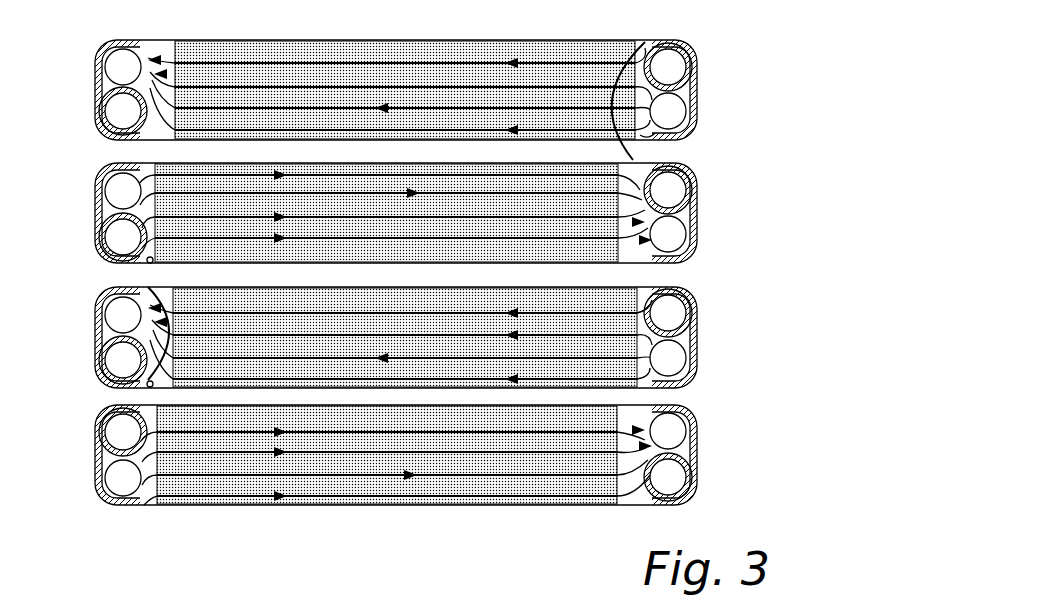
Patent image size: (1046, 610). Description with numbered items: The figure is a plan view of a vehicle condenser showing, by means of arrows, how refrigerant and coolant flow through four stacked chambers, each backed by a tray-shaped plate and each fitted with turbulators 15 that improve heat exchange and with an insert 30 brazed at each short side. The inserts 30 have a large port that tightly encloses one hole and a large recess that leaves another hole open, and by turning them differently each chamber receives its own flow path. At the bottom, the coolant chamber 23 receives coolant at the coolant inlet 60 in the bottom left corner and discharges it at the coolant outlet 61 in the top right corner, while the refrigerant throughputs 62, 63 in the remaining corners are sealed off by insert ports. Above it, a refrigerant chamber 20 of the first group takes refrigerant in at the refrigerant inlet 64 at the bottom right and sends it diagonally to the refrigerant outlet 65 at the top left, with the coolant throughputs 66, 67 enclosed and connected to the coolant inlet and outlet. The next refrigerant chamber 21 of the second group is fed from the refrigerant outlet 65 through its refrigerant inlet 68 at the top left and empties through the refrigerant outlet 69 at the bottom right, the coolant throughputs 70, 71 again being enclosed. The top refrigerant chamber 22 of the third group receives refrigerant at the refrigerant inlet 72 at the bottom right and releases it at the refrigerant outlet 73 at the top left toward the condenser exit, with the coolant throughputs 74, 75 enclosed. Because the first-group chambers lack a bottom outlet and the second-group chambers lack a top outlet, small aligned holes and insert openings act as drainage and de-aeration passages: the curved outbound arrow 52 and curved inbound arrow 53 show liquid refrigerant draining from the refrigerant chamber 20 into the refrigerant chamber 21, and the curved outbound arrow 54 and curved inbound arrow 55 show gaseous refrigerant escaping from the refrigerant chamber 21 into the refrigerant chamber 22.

The turbulators 15 is at (478, 492).
The refrigerant chamber of the first group 20 is at (113, 352).
The refrigerant chamber of the second group 21 is at (118, 238).
The refrigerant chamber of the third group 22 is at (98, 103).
The coolant chamber 23 is at (105, 470).
The insert 30 is at (97, 85).
The curved outbound arrow 52 is at (148, 380).
The curved inbound arrow 53 is at (148, 260).
The curved outbound arrow 54 is at (648, 138).
The curved inbound arrow 55 is at (645, 42).
The coolant inlet 60 is at (112, 484).
The coolant outlet 61 is at (692, 428).
The refrigerant throughput 62 is at (122, 432).
The refrigerant throughput 63 is at (685, 485).
The refrigerant inlet 64 is at (680, 365).
The refrigerant outlet 65 is at (110, 318).
The coolant throughput 66 is at (112, 374).
The coolant throughput 67 is at (692, 312).
The refrigerant inlet 68 is at (122, 196).
The refrigerant outlet 69 is at (680, 240).
The coolant throughput 70 is at (108, 258).
The coolant throughput 71 is at (692, 183).
The refrigerant inlet 72 is at (680, 115).
The refrigerant outlet 73 is at (125, 60).
The coolant throughput 74 is at (112, 113).
The coolant throughput 75 is at (692, 58).